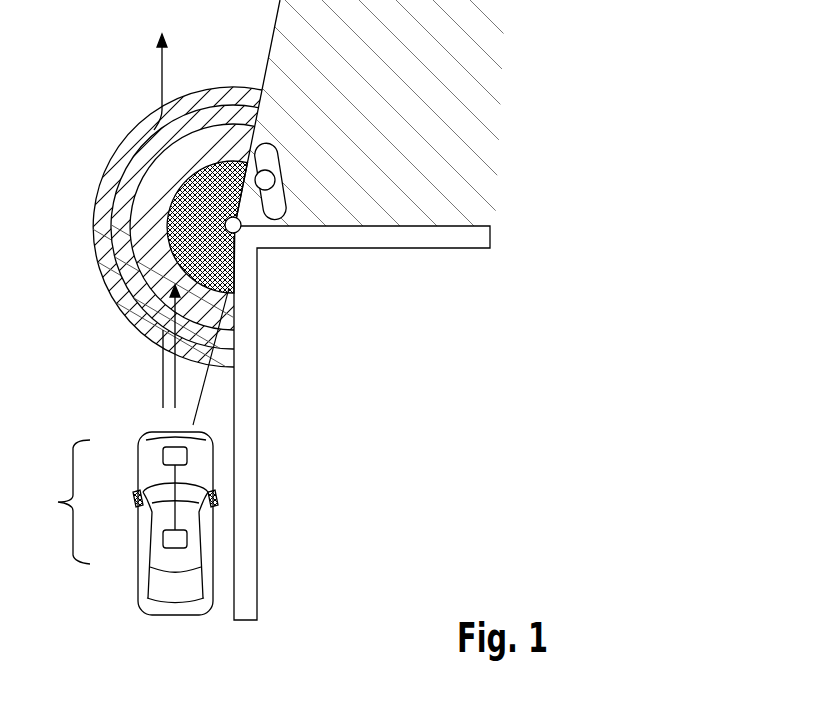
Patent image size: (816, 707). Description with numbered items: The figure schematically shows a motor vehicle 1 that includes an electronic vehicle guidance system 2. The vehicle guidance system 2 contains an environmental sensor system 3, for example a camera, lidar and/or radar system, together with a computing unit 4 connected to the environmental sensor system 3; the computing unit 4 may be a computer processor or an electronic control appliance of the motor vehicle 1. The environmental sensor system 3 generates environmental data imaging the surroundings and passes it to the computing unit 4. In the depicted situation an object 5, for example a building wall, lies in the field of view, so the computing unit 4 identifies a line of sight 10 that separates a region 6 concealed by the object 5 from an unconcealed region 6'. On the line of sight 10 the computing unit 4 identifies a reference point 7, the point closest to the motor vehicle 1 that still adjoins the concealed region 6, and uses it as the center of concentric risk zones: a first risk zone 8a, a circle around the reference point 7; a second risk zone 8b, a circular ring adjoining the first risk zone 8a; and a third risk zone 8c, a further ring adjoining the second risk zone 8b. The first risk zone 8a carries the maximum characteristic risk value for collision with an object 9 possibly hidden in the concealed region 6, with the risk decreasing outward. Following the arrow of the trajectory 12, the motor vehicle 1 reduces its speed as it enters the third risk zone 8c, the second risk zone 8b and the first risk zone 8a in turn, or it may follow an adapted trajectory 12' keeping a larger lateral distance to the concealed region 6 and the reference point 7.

The motor vehicle 1 is at (124, 451).
The electronic vehicle guidance system 2 is at (112, 502).
The environmental sensor system 3 is at (143, 452).
The computing unit 4 is at (143, 538).
The object 5 is at (245, 393).
The concealed region 6 is at (416, 150).
The unconcealed region 6' is at (59, 106).
The reference point 7 is at (244, 236).
The first risk zone 8a is at (173, 217).
The second risk zone 8b is at (120, 235).
The third risk zone 8c is at (117, 285).
The object 9 is at (268, 208).
The line of sight 10 is at (276, 30).
The trajectory 12 is at (142, 346).
The adapted trajectory 12' is at (123, 82).